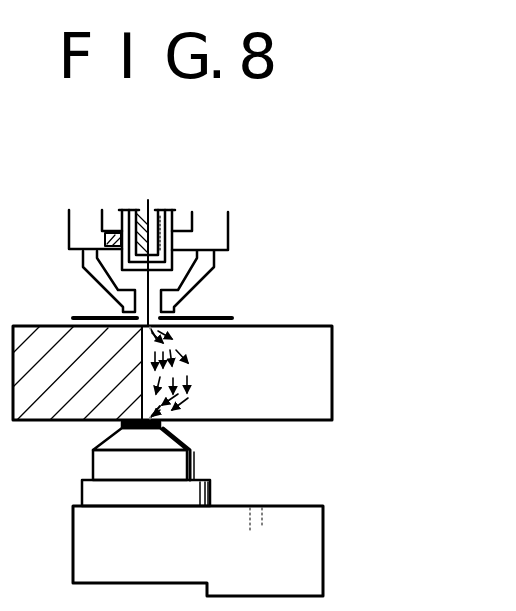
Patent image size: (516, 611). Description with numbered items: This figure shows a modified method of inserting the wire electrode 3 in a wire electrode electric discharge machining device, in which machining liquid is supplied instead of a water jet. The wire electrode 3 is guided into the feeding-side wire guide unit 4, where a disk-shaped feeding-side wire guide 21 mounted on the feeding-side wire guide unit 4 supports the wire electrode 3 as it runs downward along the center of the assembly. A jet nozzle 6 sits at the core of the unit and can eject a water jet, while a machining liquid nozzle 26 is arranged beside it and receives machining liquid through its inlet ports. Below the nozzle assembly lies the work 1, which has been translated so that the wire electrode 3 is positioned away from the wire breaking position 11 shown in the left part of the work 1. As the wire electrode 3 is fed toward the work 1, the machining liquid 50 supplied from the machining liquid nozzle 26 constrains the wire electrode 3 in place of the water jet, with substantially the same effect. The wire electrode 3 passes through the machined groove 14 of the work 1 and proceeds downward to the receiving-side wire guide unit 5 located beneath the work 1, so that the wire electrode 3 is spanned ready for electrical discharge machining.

The work 1 is at (271, 325).
The wire electrode 3 is at (150, 203).
The feeding-side wire guide unit 4 is at (228, 232).
The receiving-side wire guide unit 5 is at (85, 522).
The jet nozzle 6 is at (121, 215).
The wire breaking position 11 is at (140, 395).
The machined groove 14 is at (217, 412).
The feeding-side wire guide 21 is at (116, 256).
The machining liquid nozzle 26 is at (110, 288).
The machining liquid 50 is at (162, 303).